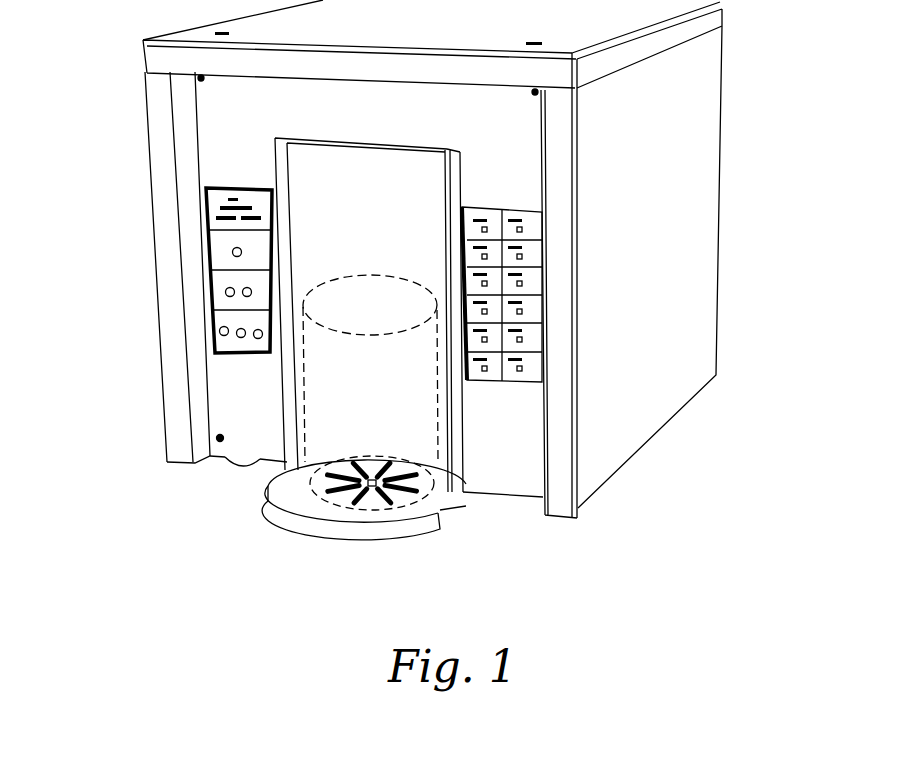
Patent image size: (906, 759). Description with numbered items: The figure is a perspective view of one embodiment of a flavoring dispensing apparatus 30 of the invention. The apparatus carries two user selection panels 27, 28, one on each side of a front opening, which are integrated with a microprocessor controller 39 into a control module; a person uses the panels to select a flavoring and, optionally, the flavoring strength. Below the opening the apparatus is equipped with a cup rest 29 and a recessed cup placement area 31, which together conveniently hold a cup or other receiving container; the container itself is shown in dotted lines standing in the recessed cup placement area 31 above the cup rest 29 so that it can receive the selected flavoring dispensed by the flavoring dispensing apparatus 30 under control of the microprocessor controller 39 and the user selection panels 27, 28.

The user selection panel 27 is at (235, 217).
The microprocessor controller 39 is at (175, 277).
The user selection panel 28 is at (522, 320).
The cup rest 29 is at (467, 503).
The flavoring dispensing apparatus 30 is at (392, 559).
The recessed cup placement area 31 is at (347, 383).